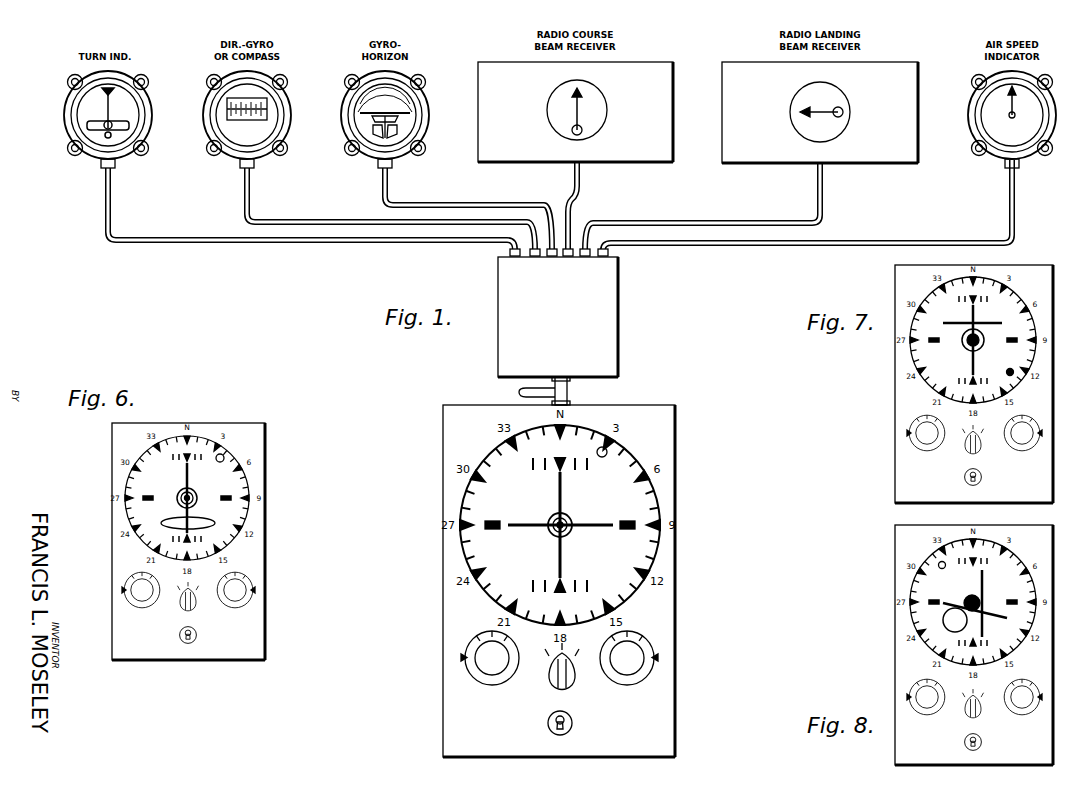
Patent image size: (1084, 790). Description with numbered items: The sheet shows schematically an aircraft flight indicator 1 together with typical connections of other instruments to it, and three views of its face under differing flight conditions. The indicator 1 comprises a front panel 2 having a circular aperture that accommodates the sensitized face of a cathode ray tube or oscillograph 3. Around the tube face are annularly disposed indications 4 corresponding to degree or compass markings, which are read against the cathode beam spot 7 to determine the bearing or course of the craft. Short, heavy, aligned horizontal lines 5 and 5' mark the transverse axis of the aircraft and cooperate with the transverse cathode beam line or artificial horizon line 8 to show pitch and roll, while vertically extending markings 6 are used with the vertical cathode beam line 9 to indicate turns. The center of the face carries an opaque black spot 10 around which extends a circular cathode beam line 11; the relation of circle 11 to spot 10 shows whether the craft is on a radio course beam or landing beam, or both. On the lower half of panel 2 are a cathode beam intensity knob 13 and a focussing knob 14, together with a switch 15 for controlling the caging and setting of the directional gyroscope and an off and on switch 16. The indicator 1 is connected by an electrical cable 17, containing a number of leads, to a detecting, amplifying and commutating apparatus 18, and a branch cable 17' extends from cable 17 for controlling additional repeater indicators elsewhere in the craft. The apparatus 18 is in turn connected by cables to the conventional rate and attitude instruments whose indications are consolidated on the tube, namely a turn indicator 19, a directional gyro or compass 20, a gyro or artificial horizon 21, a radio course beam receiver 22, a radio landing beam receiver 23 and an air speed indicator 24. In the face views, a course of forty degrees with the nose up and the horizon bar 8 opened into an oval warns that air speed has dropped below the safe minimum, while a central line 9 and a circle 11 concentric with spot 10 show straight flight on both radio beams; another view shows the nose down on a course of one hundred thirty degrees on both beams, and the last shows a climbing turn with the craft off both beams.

In FIG. 1, the flight indicator 1 is at (418, 441).
In FIG. 6, the flight indicator 1 is at (100, 508).
In FIG. 7, the flight indicator 1 is at (873, 388).
In FIG. 8, the flight indicator 1 is at (878, 599).
In FIG. 1, the front panel 2 is at (456, 486).
In FIG. 7, the front panel 2 is at (1047, 289).
In FIG. 8, the front panel 2 is at (1047, 584).
In FIG. 7, the cathode ray tube 3 is at (974, 339).
In FIG. 8, the cathode ray tube 3 is at (975, 603).
In FIG. 1, the annularly disposed indications 4 is at (461, 531).
In FIG. 1, the horizontal line 5 is at (492, 514).
In FIG. 1, the horizontal line 5' is at (626, 541).
In FIG. 1, the vertical markings 6 is at (556, 463).
In FIG. 1, the cathode beam spot 7 is at (612, 444).
In FIG. 6, the cathode beam spot 7 is at (223, 455).
In FIG. 7, the cathode beam spot 7 is at (1013, 374).
In FIG. 8, the cathode beam spot 7 is at (939, 563).
In FIG. 1, the artificial horizon line 8 is at (604, 523).
In FIG. 6, the artificial horizon line 8 is at (203, 521).
In FIG. 1, the vertical cathode beam line 9 is at (562, 489).
In FIG. 6, the vertical cathode beam line 9 is at (189, 478).
In FIG. 1, the opaque spot 10 is at (572, 531).
In FIG. 1, the circular cathode beam line 11 is at (547, 528).
In FIG. 1, the cathode beam intensity knob 13 is at (468, 673).
In FIG. 6, the cathode beam intensity knob 13 is at (134, 608).
In FIG. 7, the cathode beam intensity knob 13 is at (923, 452).
In FIG. 8, the cathode beam intensity knob 13 is at (923, 716).
In FIG. 1, the focussing knob 14 is at (637, 678).
In FIG. 6, the focussing knob 14 is at (243, 606).
In FIG. 7, the focussing knob 14 is at (1020, 452).
In FIG. 8, the focussing knob 14 is at (1018, 716).
In FIG. 1, the switch 15 is at (552, 682).
In FIG. 6, the switch 15 is at (183, 610).
In FIG. 1, the off and on switch 16 is at (573, 725).
In FIG. 6, the off and on switch 16 is at (197, 638).
In FIG. 1, the electrical cable 17 is at (575, 392).
In FIG. 1, the branch cable 17' is at (511, 386).
In FIG. 1, the detecting, amplifying and commutating apparatus 18 is at (619, 311).
In FIG. 1, the turn indicator 19 is at (63, 123).
In FIG. 1, the directional gyro or compass 20 is at (272, 152).
In FIG. 1, the gyro or artificial horizon 21 is at (430, 101).
In FIG. 1, the radio course beam receiver 22 is at (671, 67).
In FIG. 1, the radio landing beam receiver 23 is at (869, 160).
In FIG. 1, the air speed indicator 24 is at (1056, 112).